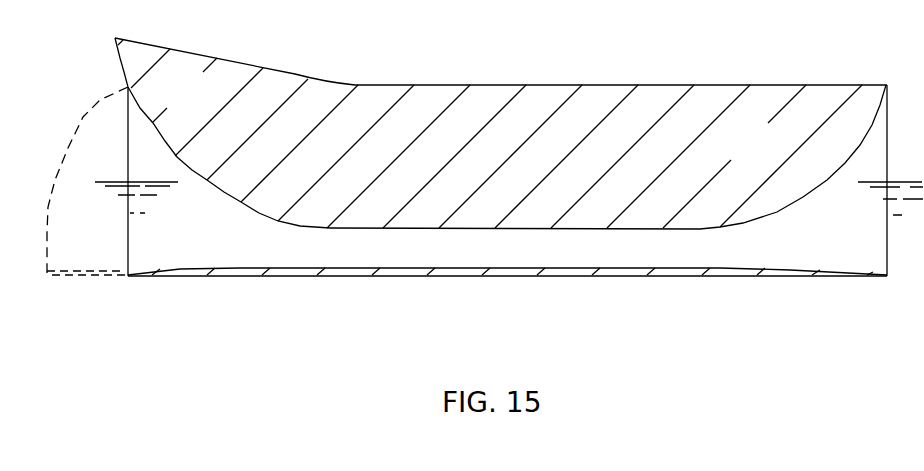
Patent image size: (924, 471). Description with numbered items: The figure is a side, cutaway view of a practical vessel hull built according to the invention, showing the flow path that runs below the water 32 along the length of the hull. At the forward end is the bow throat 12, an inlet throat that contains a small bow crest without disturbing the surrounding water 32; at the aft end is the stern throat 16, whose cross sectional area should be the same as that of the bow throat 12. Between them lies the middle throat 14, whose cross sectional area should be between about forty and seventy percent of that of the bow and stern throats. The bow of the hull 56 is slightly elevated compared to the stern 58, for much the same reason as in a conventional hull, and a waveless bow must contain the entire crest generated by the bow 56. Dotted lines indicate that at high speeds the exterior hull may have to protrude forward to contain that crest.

The bow throat 12 is at (212, 249).
The middle throat 14 is at (515, 260).
The stern throat 16 is at (858, 255).
The water 32 is at (110, 235).
The bow of the hull 56 is at (207, 106).
The stern 58 is at (768, 156).